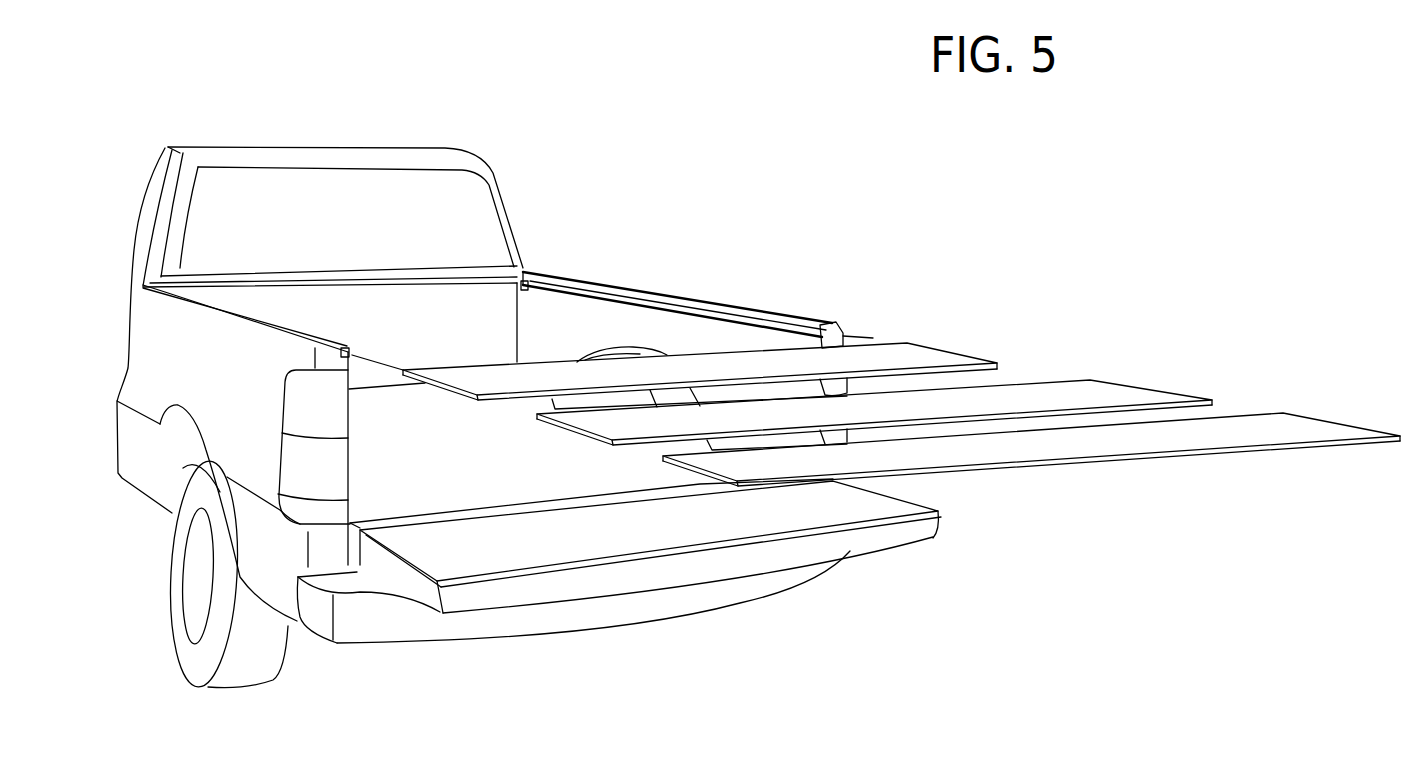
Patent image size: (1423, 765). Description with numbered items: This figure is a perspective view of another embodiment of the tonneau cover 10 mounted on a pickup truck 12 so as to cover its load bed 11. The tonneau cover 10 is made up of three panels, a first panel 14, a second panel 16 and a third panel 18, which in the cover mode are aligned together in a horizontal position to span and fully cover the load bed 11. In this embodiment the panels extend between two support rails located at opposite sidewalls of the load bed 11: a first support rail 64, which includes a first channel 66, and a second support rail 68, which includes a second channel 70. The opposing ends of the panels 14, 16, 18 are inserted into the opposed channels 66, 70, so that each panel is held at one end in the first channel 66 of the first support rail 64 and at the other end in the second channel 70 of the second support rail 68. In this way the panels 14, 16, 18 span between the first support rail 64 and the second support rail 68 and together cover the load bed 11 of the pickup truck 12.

The tonneau cover 10 is at (901, 333).
The load bed 11 is at (459, 477).
The pickup truck 12 is at (205, 378).
The first panel 14 is at (1298, 427).
The second panel 16 is at (1110, 392).
The third panel 18 is at (913, 357).
The first support rail 64 is at (240, 316).
The first channel 66 is at (355, 351).
The second support rail 68 is at (698, 275).
The second channel 70 is at (633, 300).